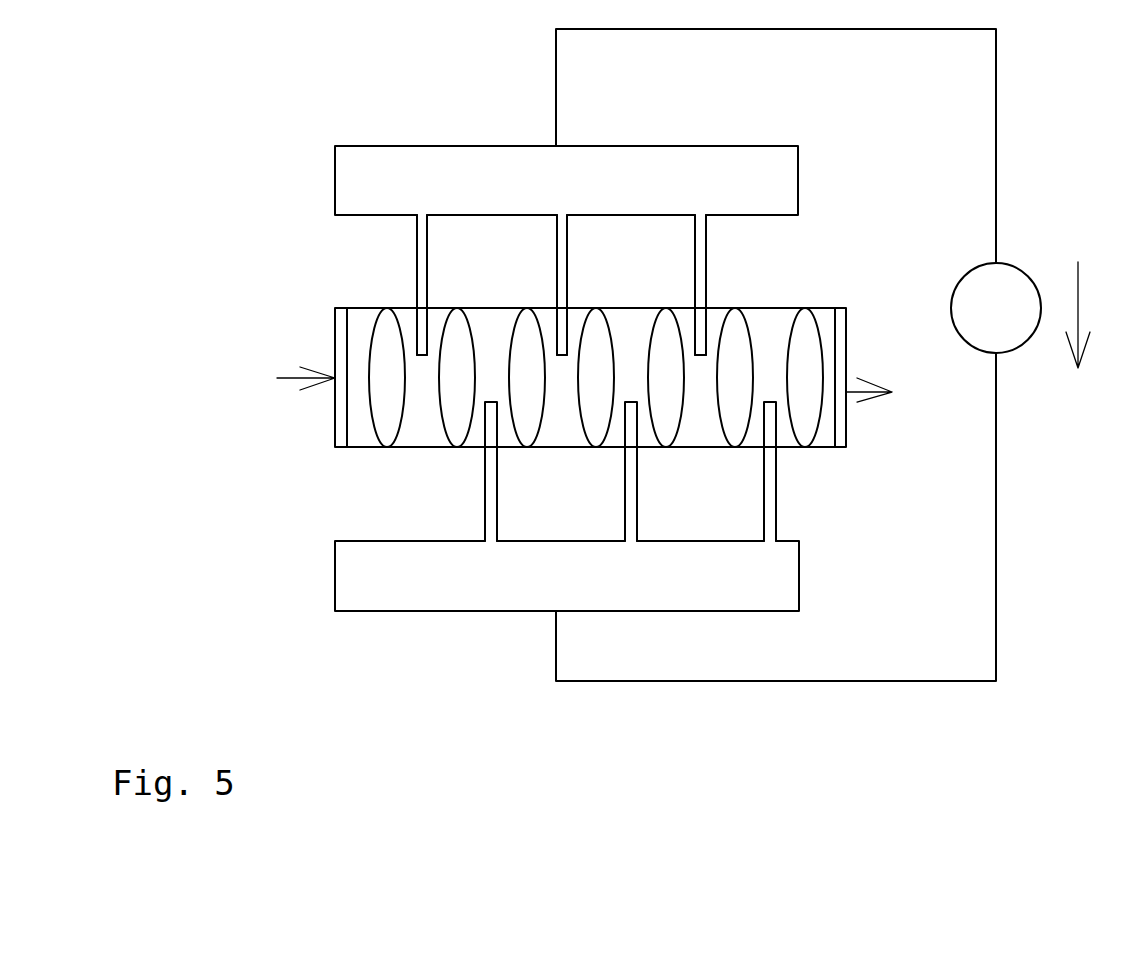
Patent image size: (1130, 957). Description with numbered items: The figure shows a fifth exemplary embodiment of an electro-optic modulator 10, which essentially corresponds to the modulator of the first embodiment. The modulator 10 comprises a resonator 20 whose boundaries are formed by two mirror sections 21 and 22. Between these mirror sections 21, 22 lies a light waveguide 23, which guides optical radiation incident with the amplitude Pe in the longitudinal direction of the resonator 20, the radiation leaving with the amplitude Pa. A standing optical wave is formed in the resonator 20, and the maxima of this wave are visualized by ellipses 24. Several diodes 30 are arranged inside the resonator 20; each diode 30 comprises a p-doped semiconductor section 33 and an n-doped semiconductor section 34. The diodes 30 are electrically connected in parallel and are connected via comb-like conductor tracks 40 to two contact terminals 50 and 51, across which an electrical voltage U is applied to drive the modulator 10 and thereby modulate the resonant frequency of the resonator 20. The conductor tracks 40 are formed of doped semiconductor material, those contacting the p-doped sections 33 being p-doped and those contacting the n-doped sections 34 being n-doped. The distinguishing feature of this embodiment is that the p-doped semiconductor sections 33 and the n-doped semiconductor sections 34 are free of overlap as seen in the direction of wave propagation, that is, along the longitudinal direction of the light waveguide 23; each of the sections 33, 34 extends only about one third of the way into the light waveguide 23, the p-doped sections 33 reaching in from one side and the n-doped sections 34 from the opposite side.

The electro-optic modulator 10 is at (497, 88).
The resonator 20 is at (823, 315).
The mirror section 21 is at (342, 435).
The mirror section 22 is at (839, 437).
The light waveguide 23 is at (363, 317).
The maxima of the optical wave 24 is at (387, 410).
The diode 30 is at (427, 317).
The p-doped semiconductor section 33 is at (422, 330).
The n-doped semiconductor section 34 is at (498, 433).
The comb-like conductor track 40 is at (422, 270).
The contact terminal 50 is at (417, 158).
The contact terminal 51 is at (440, 598).